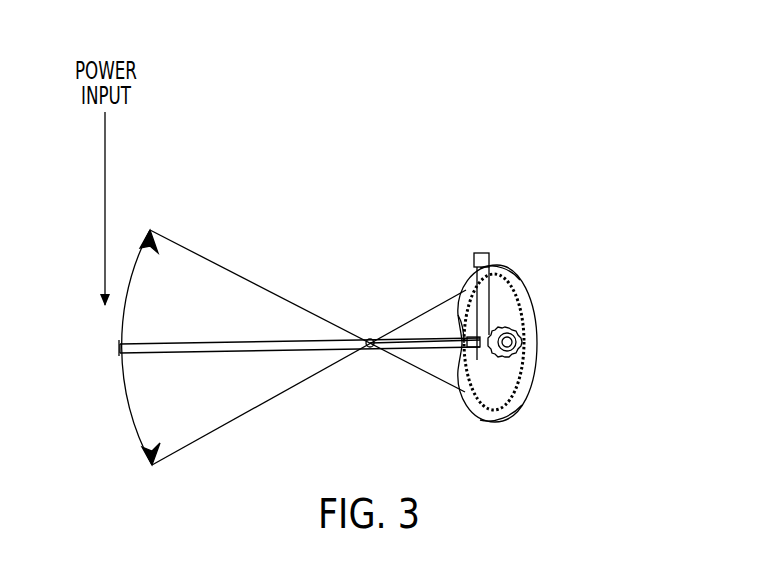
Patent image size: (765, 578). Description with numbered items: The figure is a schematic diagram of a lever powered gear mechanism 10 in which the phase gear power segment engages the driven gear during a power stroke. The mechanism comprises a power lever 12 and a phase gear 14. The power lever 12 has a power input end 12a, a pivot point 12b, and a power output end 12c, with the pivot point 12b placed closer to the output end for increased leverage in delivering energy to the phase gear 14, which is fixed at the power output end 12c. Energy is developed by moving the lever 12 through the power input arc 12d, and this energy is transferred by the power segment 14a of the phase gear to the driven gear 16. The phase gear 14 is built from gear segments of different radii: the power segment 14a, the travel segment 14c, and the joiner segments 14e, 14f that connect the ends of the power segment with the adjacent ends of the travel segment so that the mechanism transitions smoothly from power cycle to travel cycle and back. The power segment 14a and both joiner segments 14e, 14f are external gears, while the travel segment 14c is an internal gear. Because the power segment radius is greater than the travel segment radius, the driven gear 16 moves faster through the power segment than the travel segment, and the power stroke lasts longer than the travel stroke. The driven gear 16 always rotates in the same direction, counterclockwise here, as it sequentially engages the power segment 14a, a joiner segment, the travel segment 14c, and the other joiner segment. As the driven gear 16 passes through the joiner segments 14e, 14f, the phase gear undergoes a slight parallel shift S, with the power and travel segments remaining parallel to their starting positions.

The lever powered gear mechanism 10 is at (634, 241).
The power lever 12 is at (148, 343).
The power input end 12a is at (118, 350).
The pivot point 12b is at (369, 350).
The power output end 12c is at (452, 357).
The power input arc 12d is at (130, 412).
The phase gear 14 is at (546, 305).
The power segment 14a is at (533, 345).
The travel segment 14c is at (462, 318).
The joiner segment 14e is at (518, 278).
The joiner segment 14f is at (522, 405).
The driven gear 16 is at (522, 362).
The parallel shift S is at (480, 253).